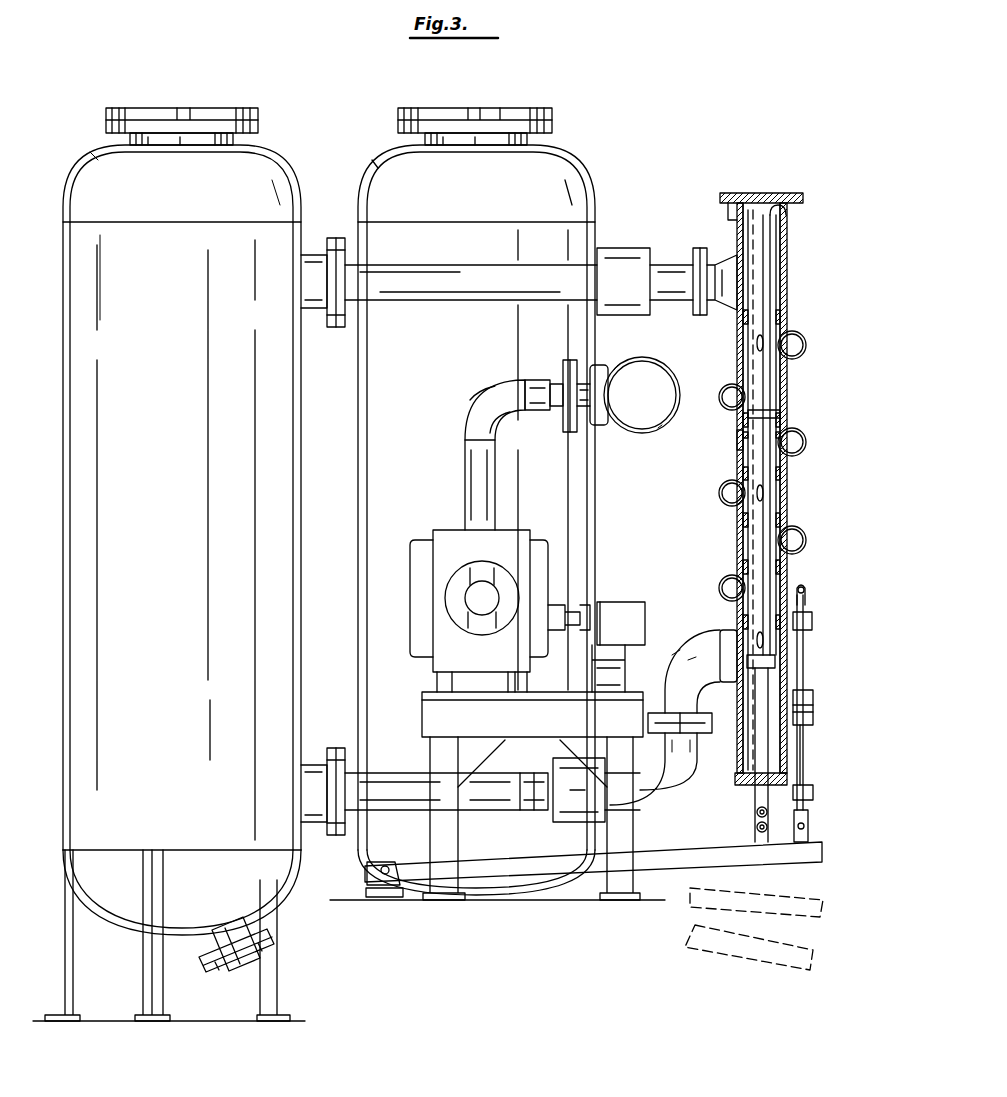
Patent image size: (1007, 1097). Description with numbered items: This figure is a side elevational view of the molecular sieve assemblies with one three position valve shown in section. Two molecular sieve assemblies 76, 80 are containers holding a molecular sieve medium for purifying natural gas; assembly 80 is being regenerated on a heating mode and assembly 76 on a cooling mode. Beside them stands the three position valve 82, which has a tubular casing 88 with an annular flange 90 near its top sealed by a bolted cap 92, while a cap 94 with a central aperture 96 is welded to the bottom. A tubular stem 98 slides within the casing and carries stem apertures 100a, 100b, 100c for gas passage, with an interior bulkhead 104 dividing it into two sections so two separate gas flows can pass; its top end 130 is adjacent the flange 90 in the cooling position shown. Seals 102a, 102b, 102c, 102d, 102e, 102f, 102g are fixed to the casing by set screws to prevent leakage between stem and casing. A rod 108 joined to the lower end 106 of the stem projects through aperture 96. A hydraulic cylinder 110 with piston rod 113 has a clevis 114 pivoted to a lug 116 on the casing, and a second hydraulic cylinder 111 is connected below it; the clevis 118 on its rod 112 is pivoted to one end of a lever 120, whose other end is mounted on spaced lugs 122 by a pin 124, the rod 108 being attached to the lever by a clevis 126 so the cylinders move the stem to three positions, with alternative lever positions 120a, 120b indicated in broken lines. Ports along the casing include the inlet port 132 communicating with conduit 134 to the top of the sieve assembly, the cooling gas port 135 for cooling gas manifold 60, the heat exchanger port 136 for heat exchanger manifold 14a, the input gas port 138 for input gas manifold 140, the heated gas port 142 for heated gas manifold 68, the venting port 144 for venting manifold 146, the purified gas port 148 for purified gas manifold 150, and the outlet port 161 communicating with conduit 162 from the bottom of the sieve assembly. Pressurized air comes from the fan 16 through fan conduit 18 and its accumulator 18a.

The fan 16 is at (452, 540).
The fan conduit 18 is at (465, 470).
The accumulator 18a is at (642, 380).
The cooling gas manifold 60 is at (806, 345).
The heated gas manifold 68 is at (718, 493).
The molecular sieve assembly 76 is at (247, 160).
The molecular sieve assembly 80 is at (545, 160).
The three position valve 82 is at (724, 444).
The tubular casing 88 is at (788, 265).
The annular flange 90 is at (727, 208).
The cap 92 is at (785, 193).
The cap 94 is at (737, 779).
The central aperture 96 is at (760, 795).
The tubular stem 98 is at (768, 297).
The stem aperture 100a is at (757, 345).
The stem aperture 100b is at (758, 490).
The stem aperture 100c is at (757, 640).
The seal 102a is at (784, 323).
The seal 102b is at (784, 385).
The seal 102c is at (790, 418).
The seal 102d is at (790, 478).
The seal 102e is at (790, 528).
The seal 102f is at (790, 565).
The seal 102g is at (805, 615).
The interior bulkhead 104 is at (770, 410).
The lower end of the stem 106 is at (775, 665).
The rod 108 is at (756, 812).
The hydraulic cylinder 110 is at (803, 650).
The second hydraulic cylinder 111 is at (803, 740).
The rod 112 is at (808, 808).
The piston rod 113 is at (812, 620).
The clevis 114 is at (806, 595).
The lug 116 is at (806, 585).
The clevis 118 is at (808, 826).
The lever 120 is at (823, 853).
The base plate lowered position 120a is at (812, 948).
The base plate intermediate position 120b is at (823, 908).
The lugs 122 is at (367, 875).
The pin 124 is at (383, 866).
The clevis 126 is at (756, 828).
The top end of the stem 130 is at (787, 215).
The molecular sieve assembly inlet port 132 is at (725, 297).
The conduit 134 is at (482, 275).
The cooling gas port 135 is at (797, 340).
The heat exchanger port 136 is at (722, 405).
The input gas port 138 is at (792, 438).
The input gas manifold 140 is at (806, 442).
The heated gas port 142 is at (722, 505).
The venting port 144 is at (796, 535).
The venting manifold 146 is at (806, 540).
The purified gas port 148 is at (726, 582).
The purified gas manifold 150 is at (720, 588).
The heat exchanger manifold 14a is at (735, 386).
The molecular sieve assembly outlet port 161 is at (722, 655).
The conduit 162 is at (683, 675).